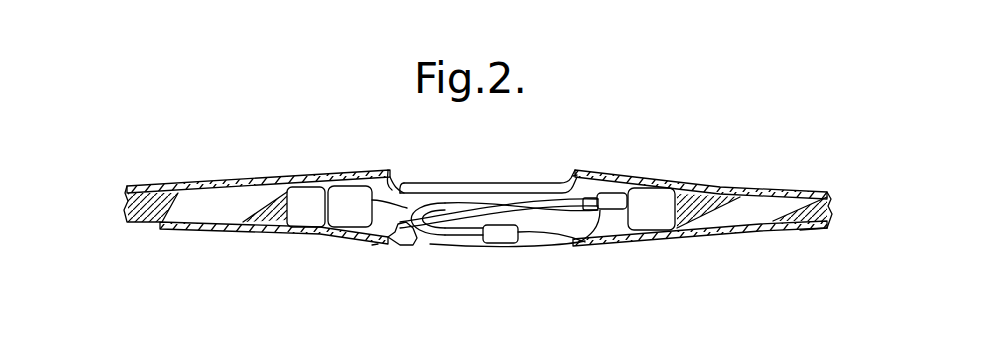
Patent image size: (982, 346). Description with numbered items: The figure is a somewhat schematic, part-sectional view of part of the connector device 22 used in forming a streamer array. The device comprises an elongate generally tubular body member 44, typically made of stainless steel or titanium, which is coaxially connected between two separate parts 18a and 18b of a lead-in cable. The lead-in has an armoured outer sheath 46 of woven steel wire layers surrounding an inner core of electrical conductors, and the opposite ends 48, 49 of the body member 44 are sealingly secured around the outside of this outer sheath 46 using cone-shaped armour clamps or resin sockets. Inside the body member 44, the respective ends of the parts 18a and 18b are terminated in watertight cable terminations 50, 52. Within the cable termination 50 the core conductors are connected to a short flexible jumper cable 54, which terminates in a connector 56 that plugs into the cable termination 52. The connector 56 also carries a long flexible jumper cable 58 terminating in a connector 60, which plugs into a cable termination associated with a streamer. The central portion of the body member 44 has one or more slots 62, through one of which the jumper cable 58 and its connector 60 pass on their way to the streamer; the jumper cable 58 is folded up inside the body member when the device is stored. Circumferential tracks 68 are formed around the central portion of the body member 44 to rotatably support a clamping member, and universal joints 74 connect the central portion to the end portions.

The first part of the lead-in 18a is at (128, 185).
The second part of the lead-in 18b is at (825, 231).
The connector device 22 is at (682, 268).
The body member 44 is at (347, 172).
The armoured outer sheath 46 is at (820, 190).
The first end of the body member 48 is at (199, 180).
The second end of the body member 49 is at (792, 188).
The cable termination 50 is at (307, 212).
The cable termination 52 is at (656, 190).
The short flexible jumper cable 54 is at (404, 186).
The connector 56 is at (611, 190).
The long flexible jumper cable 58 is at (418, 242).
The connector 60 is at (505, 244).
The slots 62 is at (507, 185).
The circumferential tracks 68 is at (391, 168).
The universal joints 74 is at (578, 160).